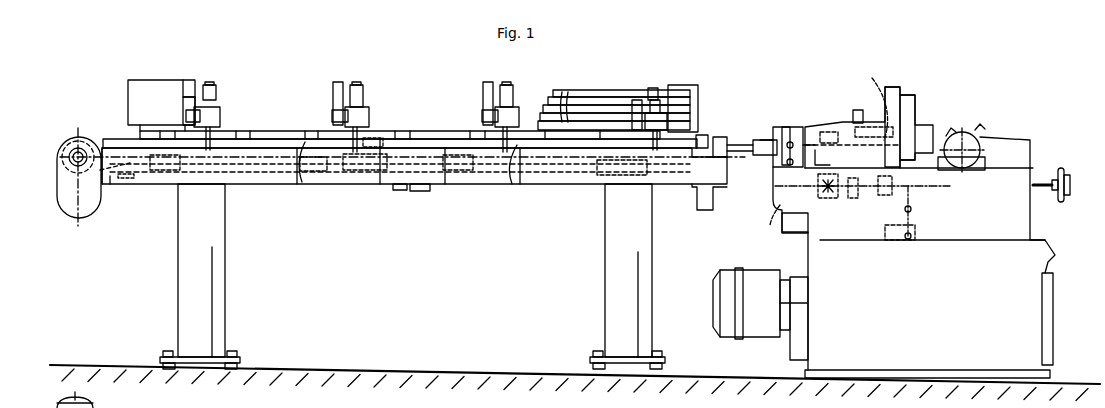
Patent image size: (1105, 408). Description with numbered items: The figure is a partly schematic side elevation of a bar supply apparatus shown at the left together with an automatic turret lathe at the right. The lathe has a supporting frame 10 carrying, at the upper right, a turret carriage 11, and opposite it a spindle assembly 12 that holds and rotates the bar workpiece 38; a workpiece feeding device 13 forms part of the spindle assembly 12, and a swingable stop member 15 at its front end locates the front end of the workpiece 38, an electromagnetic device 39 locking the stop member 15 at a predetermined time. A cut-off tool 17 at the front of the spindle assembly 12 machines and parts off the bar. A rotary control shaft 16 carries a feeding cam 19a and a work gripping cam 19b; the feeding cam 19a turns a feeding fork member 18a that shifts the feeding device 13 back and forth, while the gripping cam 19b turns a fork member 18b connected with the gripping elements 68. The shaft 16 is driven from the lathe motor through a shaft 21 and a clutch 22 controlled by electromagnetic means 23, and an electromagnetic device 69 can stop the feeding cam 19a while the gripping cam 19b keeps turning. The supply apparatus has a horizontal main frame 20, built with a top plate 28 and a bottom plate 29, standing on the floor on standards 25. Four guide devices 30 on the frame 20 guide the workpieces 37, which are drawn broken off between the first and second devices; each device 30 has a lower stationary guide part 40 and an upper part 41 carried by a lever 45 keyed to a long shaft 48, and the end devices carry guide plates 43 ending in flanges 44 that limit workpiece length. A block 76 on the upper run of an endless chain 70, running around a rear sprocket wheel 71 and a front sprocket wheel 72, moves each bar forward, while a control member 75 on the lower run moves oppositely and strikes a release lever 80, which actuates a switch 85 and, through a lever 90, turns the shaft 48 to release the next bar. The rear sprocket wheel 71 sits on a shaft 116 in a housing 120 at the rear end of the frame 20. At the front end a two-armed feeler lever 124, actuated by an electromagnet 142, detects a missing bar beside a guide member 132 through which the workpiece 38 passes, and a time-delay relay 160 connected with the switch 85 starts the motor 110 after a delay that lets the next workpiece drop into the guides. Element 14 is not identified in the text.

The supporting frame 10 is at (924, 304).
The turret carriage 11 is at (1012, 140).
The spindle assembly 12 is at (843, 122).
The workpiece feeding device 13 is at (785, 135).
The bracket 14 is at (825, 132).
The stop member 15 is at (937, 130).
The rotary control shaft 16 is at (851, 192).
The cut-off tool 17 is at (908, 120).
The feeding fork member 18a is at (768, 125).
The fork member 18b is at (822, 166).
The feeding cam 19a is at (762, 217).
The work gripping cam 19b is at (828, 198).
The main frame 20 is at (530, 180).
The shaft 21 is at (924, 188).
The clutch 22 is at (882, 194).
The electromagnetic means 23 is at (880, 247).
The standards 25 is at (219, 281).
The top plate 28 is at (252, 135).
The bottom plate 29 is at (241, 184).
The guide devices 30 is at (210, 112).
The workpieces 37 is at (566, 90).
The workpiece 38 is at (742, 156).
The electromagnetic device 39 is at (866, 105).
The lower stationary part 40 is at (412, 138).
The upper part 41 is at (512, 182).
The guide plates 43 is at (153, 92).
The flanges 44 is at (128, 94).
The lever 45 is at (300, 182).
The shaft 48 is at (576, 177).
The gripping elements 68 is at (868, 105).
The electromagnetic device 69 is at (795, 233).
The endless chain 70 is at (150, 183).
The rear sprocket wheel 71 is at (118, 165).
The front sprocket wheel 72 is at (442, 178).
The control member 75 is at (118, 180).
The block 76 is at (380, 138).
The release lever 80 is at (375, 174).
The switch 85 is at (399, 191).
The lever 90 is at (318, 175).
The motor 110 is at (96, 400).
The shaft 116 is at (74, 166).
The housing 120 is at (96, 203).
The two-armed lever 124 is at (703, 134).
The guide member 132 is at (724, 136).
The electromagnet 142 is at (713, 202).
The time-delay relay 160 is at (422, 192).